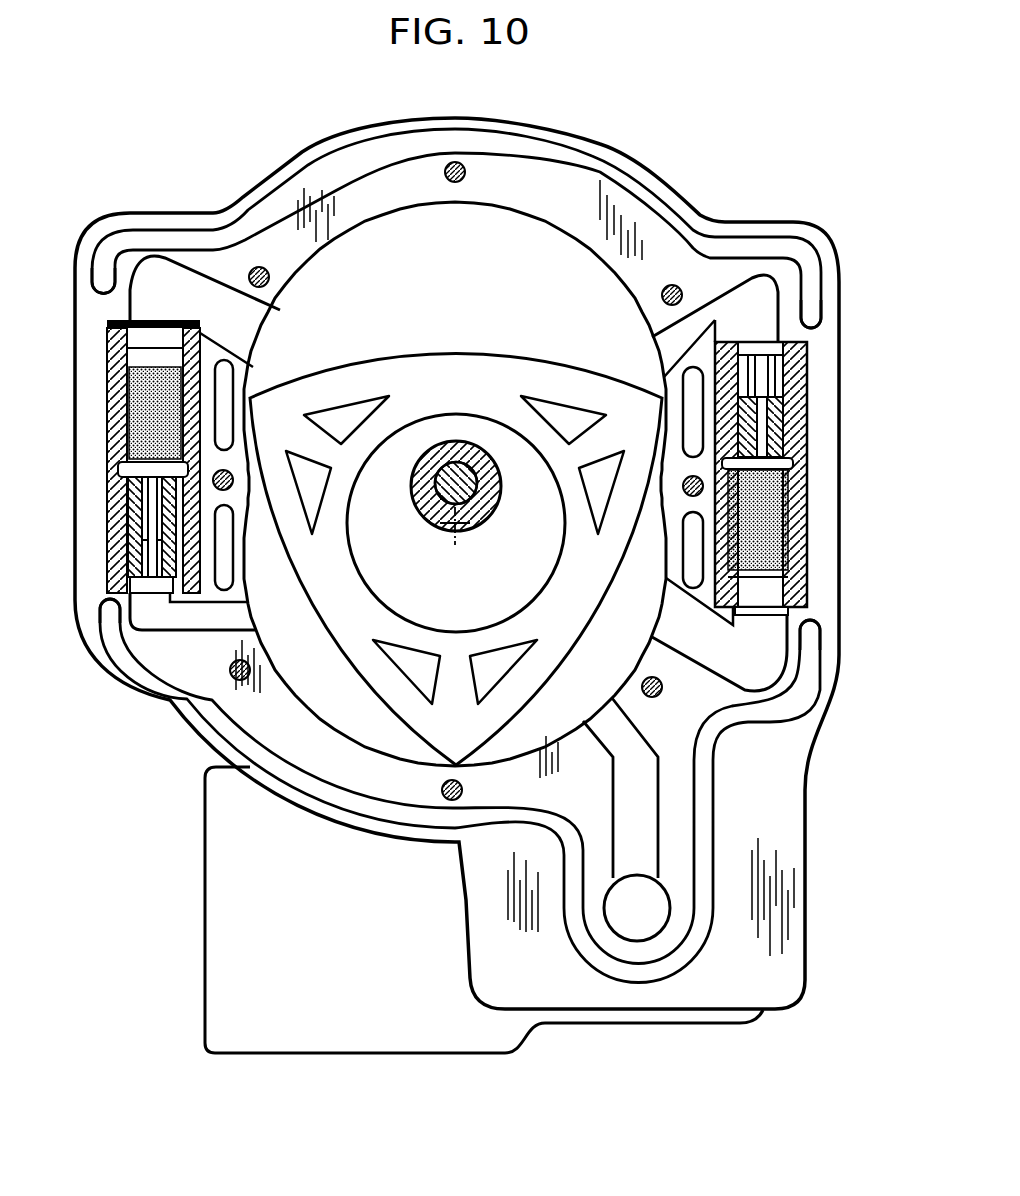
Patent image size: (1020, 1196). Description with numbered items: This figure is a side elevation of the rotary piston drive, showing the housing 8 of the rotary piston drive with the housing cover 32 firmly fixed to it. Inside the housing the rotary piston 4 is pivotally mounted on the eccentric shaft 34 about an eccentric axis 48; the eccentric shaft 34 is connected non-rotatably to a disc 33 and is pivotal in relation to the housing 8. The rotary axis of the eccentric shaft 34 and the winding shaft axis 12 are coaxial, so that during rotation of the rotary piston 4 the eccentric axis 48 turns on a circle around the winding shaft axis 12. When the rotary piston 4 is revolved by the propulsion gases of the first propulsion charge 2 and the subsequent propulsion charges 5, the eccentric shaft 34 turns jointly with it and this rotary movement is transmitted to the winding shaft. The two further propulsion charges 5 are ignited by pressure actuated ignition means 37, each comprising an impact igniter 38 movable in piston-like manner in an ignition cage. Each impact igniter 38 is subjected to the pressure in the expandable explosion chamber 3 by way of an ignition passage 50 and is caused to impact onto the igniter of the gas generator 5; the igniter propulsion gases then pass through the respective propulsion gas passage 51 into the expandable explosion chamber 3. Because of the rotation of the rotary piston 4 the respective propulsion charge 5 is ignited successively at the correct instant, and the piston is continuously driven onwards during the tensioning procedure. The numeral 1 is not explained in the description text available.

The inlet port 1 is at (640, 918).
The first propulsion charge 2 is at (620, 788).
The expandable explosion chamber 3 is at (573, 256).
The rotary piston 4 is at (355, 378).
The propulsion charge 5 is at (116, 397).
The housing 8 is at (250, 712).
The winding shaft axis 12 is at (436, 442).
The housing cover 32 is at (225, 935).
The disc 33 is at (525, 462).
The eccentric shaft 34 is at (478, 440).
The pressure actuated ignition means 37 is at (108, 512).
The impact igniter 38 is at (142, 550).
The eccentric axis 48 is at (458, 545).
The ignition passage 50 is at (750, 292).
The propulsion gas passage 51 is at (168, 277).